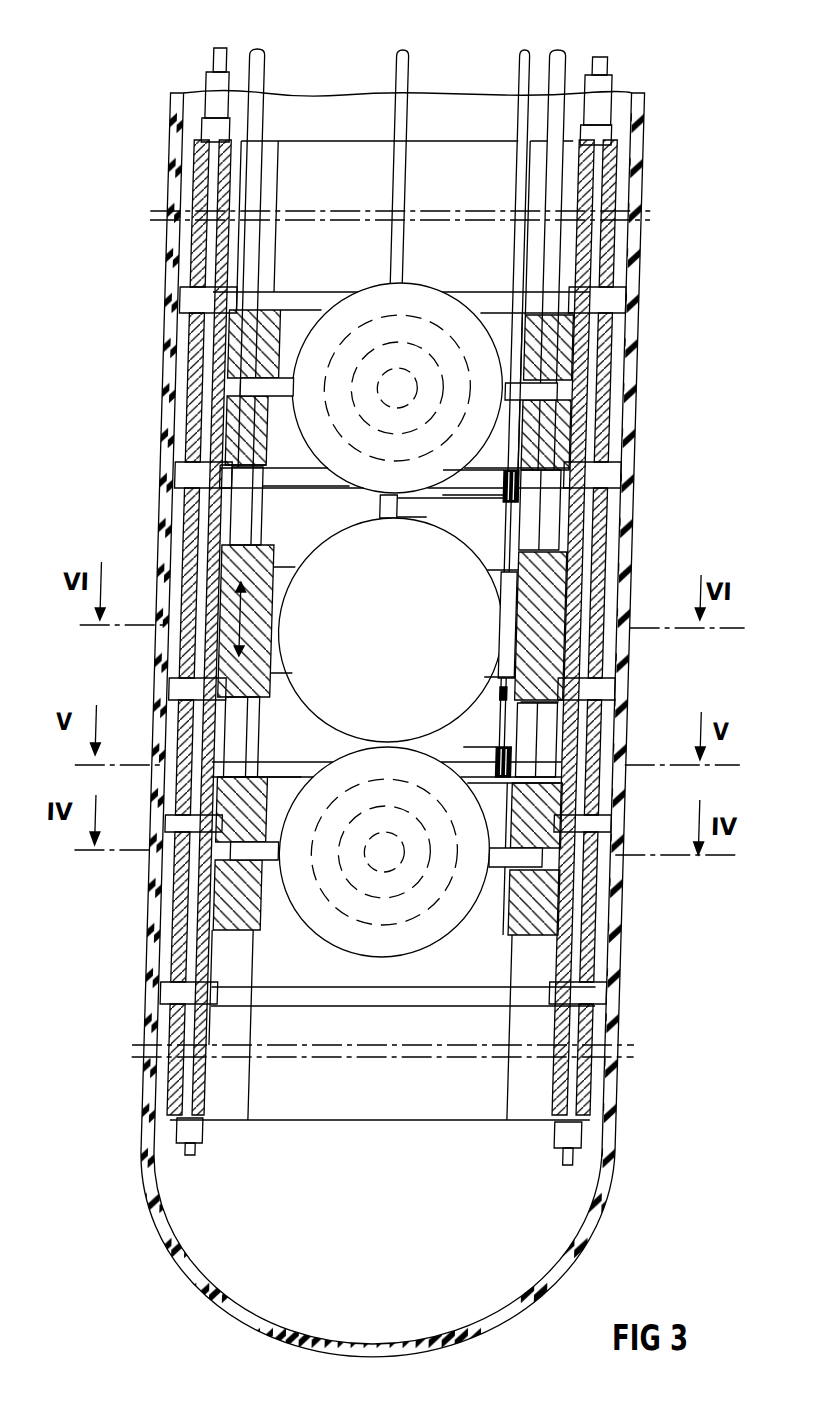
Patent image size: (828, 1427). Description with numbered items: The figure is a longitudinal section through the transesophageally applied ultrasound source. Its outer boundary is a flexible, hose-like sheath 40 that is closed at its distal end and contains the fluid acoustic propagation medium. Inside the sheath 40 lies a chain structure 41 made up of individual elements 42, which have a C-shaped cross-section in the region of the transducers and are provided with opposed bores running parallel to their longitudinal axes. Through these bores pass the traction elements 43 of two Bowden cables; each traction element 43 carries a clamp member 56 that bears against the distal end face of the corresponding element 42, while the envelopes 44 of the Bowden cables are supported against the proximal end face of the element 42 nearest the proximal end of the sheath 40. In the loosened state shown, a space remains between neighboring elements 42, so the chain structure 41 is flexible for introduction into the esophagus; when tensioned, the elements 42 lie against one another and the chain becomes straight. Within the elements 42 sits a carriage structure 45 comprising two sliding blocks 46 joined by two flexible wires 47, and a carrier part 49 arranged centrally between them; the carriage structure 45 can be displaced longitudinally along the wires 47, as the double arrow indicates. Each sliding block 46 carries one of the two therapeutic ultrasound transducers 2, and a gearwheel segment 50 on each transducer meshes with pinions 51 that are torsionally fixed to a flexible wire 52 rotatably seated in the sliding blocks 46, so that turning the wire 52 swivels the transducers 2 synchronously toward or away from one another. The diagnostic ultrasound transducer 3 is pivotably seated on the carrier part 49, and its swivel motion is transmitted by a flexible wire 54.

The therapeutic ultrasound transducer 2 is at (370, 290).
The diagnostic ultrasound transducer 3 is at (376, 647).
The sheath 40 is at (639, 998).
The chain structure 41 is at (612, 661).
The element 42 is at (197, 182).
The traction element 43 is at (209, 367).
The envelope 44 is at (203, 83).
The carriage structure 45 is at (288, 702).
The sliding block 46 is at (552, 348).
The flexible wire 47 is at (252, 70).
The carrier part 49 is at (552, 592).
The gearwheel segment 50 is at (467, 494).
The pinion 51 is at (513, 508).
The flexible wire 52 is at (508, 72).
The flexible wire 54 is at (412, 63).
The clamp member 56 is at (213, 1132).